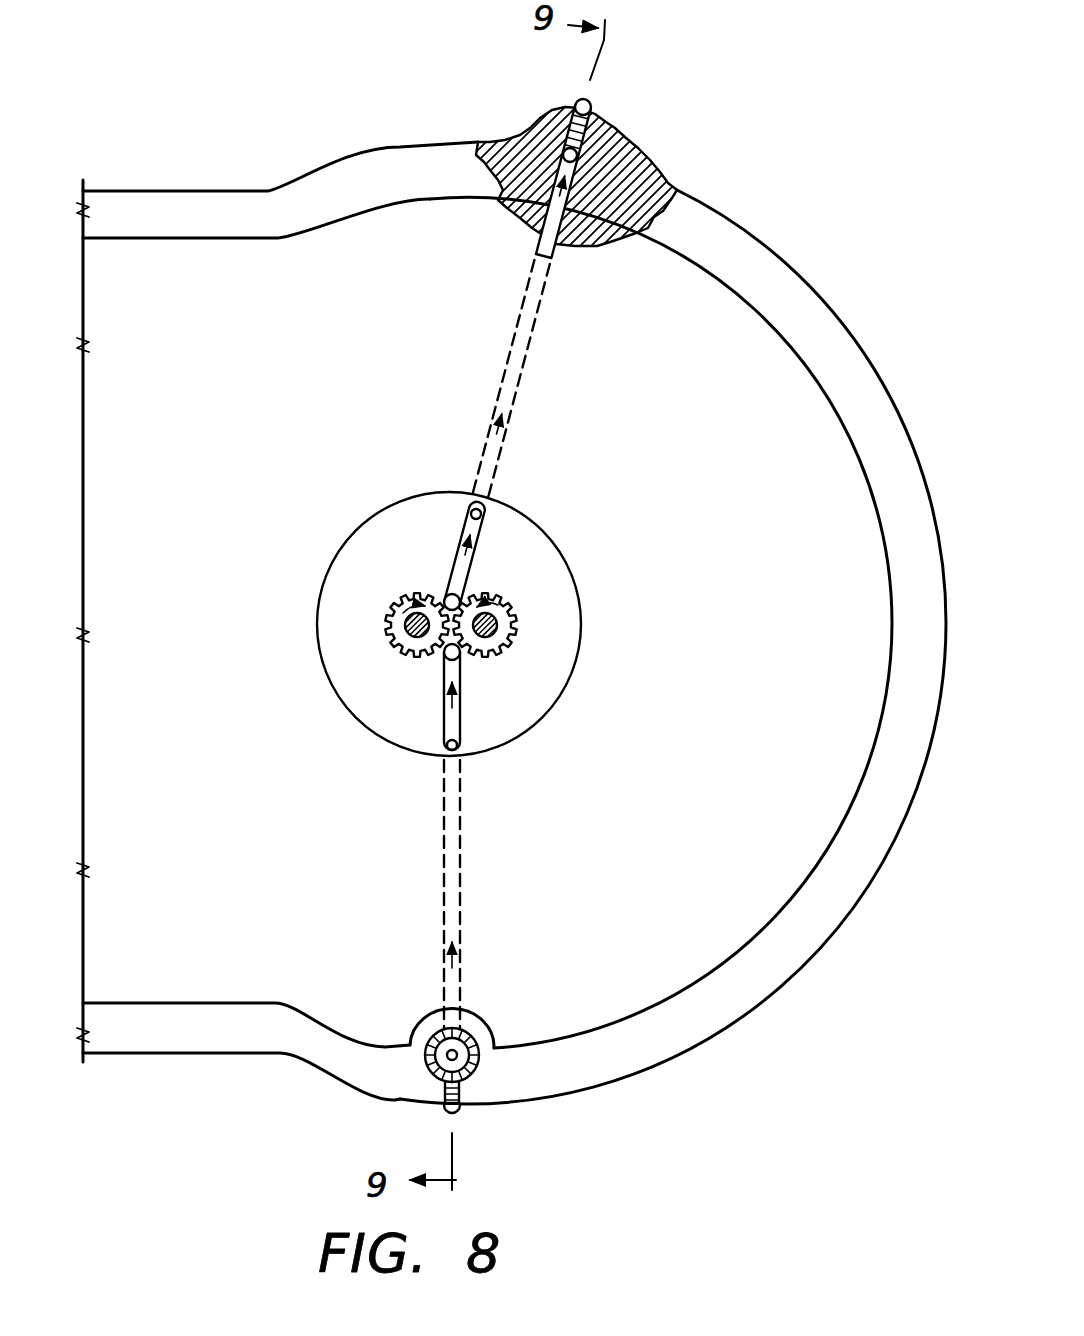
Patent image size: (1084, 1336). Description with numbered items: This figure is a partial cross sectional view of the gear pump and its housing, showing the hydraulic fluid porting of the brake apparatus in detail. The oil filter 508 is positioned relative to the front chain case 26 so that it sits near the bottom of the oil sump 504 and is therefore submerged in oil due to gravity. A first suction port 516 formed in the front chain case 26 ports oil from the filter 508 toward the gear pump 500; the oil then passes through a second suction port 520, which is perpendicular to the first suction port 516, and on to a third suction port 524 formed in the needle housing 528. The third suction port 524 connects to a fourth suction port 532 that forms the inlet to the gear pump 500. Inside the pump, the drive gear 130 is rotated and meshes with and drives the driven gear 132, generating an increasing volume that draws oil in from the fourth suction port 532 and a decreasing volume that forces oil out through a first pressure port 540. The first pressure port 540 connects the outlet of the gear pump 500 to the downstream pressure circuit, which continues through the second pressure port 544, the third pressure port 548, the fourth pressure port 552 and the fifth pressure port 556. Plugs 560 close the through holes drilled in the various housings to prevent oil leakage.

The front chain case 26 is at (317, 1088).
The oil sump 504 is at (665, 962).
The needle housing 528 is at (383, 738).
The drive gear 130 is at (388, 623).
The driven gear 132 is at (513, 612).
The gear pump 500 is at (394, 651).
The first pressure port 540 is at (460, 597).
The fourth suction port 532 is at (460, 652).
The second pressure port 544 is at (480, 530).
The third pressure port 548 is at (482, 511).
The fourth pressure port 552 is at (506, 360).
The fifth pressure port 556 is at (580, 157).
The plugs 560 is at (592, 138).
The third suction port 524 is at (461, 703).
The second suction port 520 is at (458, 748).
The first suction port 516 is at (465, 848).
The oil filter 508 is at (473, 1070).